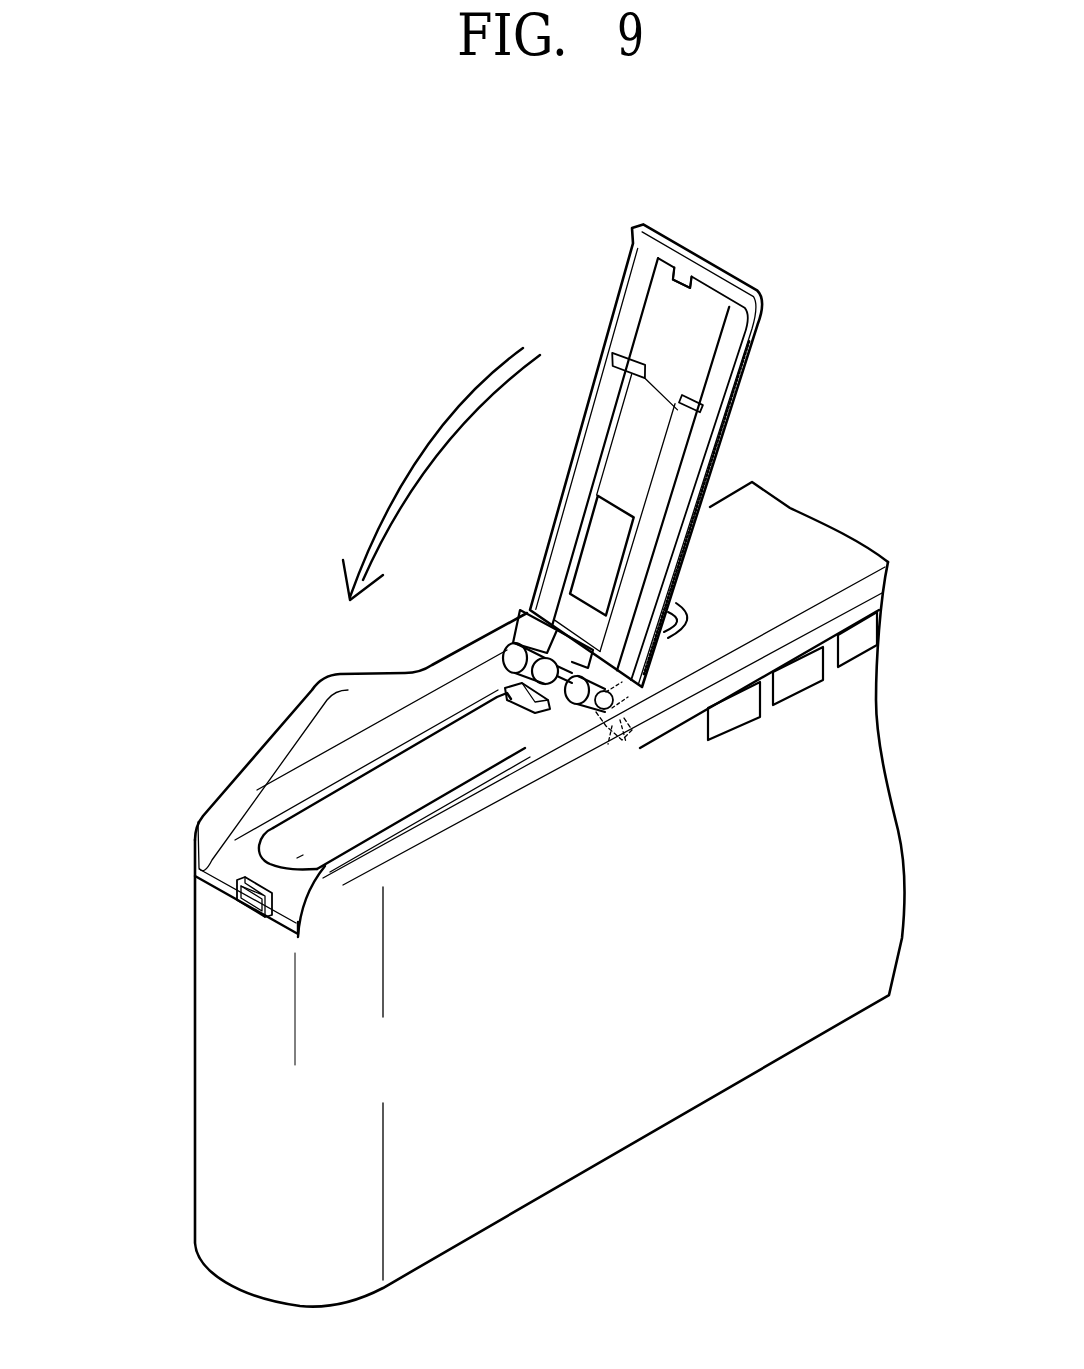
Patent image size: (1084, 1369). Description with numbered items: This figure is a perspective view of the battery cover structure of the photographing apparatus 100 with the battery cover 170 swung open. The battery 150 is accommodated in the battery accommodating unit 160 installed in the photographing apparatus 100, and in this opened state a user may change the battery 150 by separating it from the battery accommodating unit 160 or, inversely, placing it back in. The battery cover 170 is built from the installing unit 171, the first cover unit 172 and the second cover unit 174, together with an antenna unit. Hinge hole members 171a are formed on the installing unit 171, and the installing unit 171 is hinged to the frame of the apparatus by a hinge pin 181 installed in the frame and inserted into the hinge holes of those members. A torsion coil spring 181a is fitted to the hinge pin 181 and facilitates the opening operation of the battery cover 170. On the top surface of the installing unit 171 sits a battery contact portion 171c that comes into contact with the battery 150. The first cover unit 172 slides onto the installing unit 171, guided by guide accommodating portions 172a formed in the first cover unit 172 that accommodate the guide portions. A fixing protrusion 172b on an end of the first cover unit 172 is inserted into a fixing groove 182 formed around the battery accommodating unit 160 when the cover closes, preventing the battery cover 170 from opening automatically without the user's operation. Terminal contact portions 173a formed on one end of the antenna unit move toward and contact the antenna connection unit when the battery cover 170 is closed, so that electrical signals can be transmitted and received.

The photographing apparatus 100 is at (188, 733).
The battery 150 is at (347, 820).
The battery accommodating unit 160 is at (280, 813).
The battery cover 170 is at (775, 292).
The installing unit 171 is at (630, 450).
The hinge hole members 171a is at (522, 652).
The battery contact portion 171c is at (588, 550).
The first cover unit 172 is at (750, 320).
The guide accommodating portions 172a is at (587, 463).
The fixing protrusion 172b is at (677, 264).
The terminal contact portions 173a is at (545, 712).
The second cover unit 174 is at (752, 352).
The hinge pin 181 is at (620, 716).
The torsion coil spring 181a is at (627, 735).
The fixing groove 182 is at (235, 900).